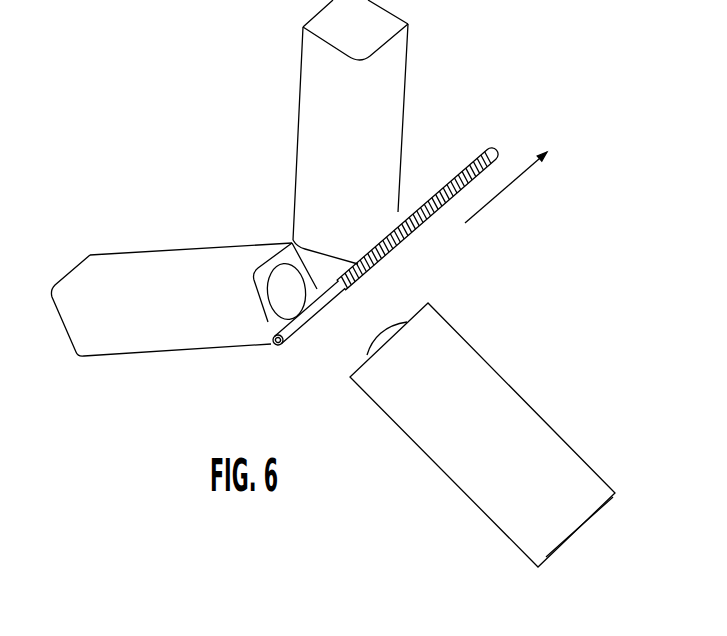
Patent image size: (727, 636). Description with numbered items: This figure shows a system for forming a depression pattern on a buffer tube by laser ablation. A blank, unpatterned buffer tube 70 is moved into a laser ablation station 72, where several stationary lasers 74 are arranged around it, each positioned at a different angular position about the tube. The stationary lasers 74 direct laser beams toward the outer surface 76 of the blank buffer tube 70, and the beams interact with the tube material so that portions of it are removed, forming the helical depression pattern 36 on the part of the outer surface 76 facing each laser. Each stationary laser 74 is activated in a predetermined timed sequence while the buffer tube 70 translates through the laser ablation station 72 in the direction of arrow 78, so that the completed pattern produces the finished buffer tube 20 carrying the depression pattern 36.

The buffer tube 20 is at (374, 242).
The helical depression pattern 36 is at (441, 168).
The blank buffer tube 70 is at (295, 338).
The laser ablation station 72 is at (218, 162).
The stationary laser 74 is at (385, 78).
The outer surface 76 is at (337, 308).
The arrow 78 is at (505, 187).